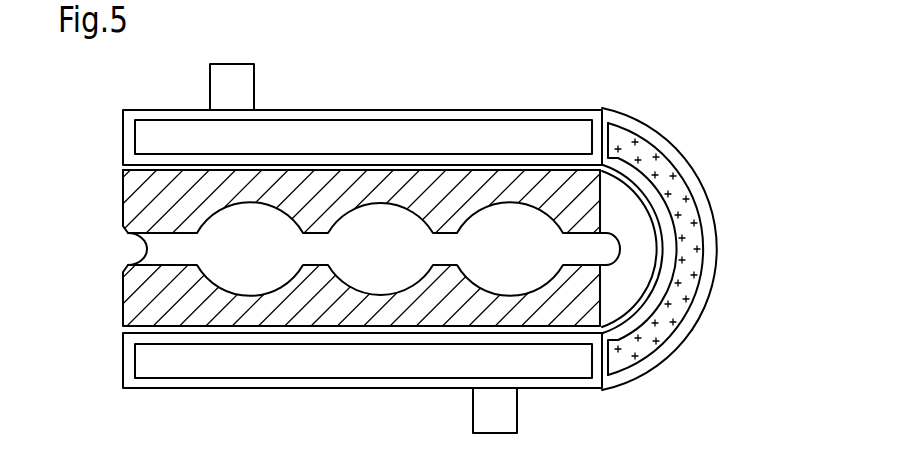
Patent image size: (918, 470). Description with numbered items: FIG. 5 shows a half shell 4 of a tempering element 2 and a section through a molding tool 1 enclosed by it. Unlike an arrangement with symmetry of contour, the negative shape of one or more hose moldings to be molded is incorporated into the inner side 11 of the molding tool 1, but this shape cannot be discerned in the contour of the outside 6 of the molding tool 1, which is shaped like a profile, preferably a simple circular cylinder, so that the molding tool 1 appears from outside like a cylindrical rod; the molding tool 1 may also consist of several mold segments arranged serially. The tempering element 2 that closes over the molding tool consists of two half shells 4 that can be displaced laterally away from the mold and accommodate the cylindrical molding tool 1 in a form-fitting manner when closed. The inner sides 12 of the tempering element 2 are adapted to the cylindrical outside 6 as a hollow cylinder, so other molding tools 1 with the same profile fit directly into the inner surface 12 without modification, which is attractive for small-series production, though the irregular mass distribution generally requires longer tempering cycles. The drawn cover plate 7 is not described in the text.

The molding tool 1 is at (452, 187).
The upper cover plate 7 is at (530, 138).
The outside of the molding tool 6 is at (398, 330).
The tempering element 2 is at (690, 164).
The half shell 4 is at (680, 343).
The inner side of the molding tool 11 is at (244, 296).
The inner side of the tempering element 12 is at (150, 169).